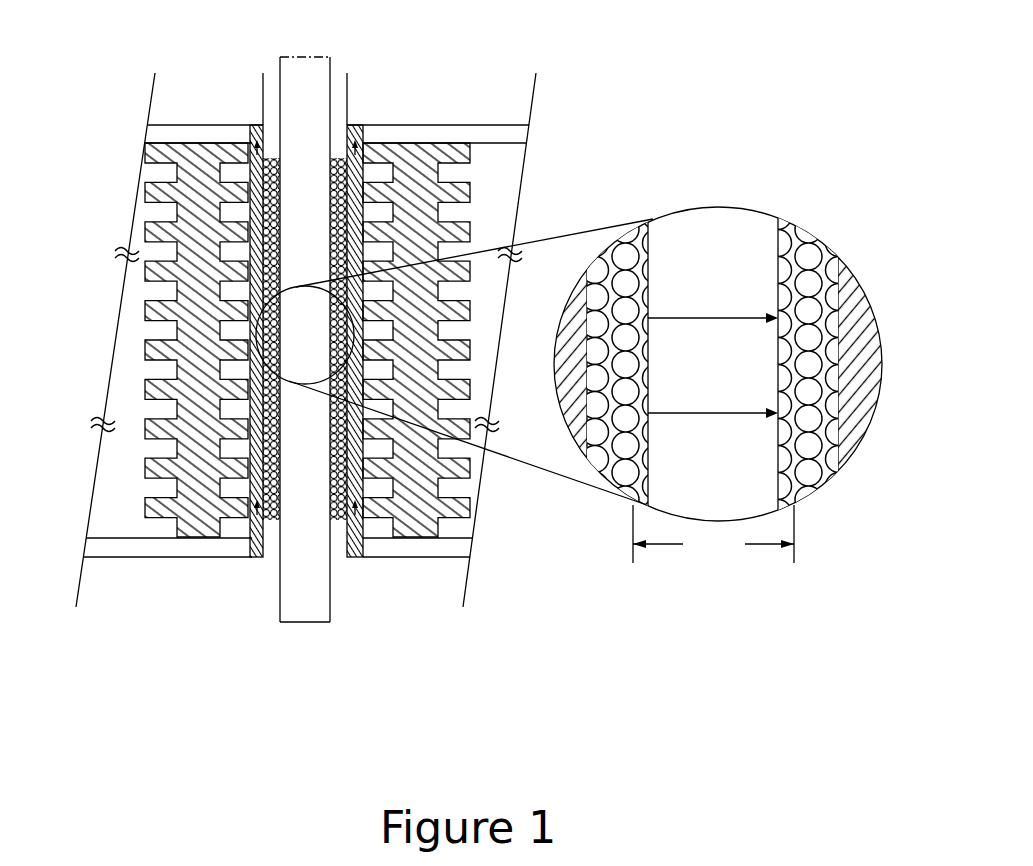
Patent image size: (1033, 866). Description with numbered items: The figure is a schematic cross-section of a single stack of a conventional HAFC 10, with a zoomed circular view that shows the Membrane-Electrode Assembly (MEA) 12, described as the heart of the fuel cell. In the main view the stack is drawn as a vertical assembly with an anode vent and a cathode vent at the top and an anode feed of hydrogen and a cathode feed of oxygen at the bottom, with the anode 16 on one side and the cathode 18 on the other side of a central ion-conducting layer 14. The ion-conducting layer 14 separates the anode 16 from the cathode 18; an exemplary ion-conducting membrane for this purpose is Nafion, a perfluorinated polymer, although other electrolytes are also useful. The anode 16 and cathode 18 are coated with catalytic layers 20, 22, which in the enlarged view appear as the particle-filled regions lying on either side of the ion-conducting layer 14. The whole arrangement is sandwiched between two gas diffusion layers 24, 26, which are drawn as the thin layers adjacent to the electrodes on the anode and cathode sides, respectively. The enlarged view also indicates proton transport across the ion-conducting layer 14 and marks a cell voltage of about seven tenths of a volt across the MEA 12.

The HAFC 10 is at (100, 145).
The Membrane-Electrode Assembly 12 is at (709, 403).
The ion-conducting layer 14 is at (723, 279).
The anode 16 is at (196, 214).
The cathode 18 is at (446, 191).
The catalytic layer 20 is at (592, 475).
The catalytic layer 22 is at (772, 266).
The gas diffusion layer 24 is at (258, 565).
The gas diffusion layer 26 is at (360, 563).